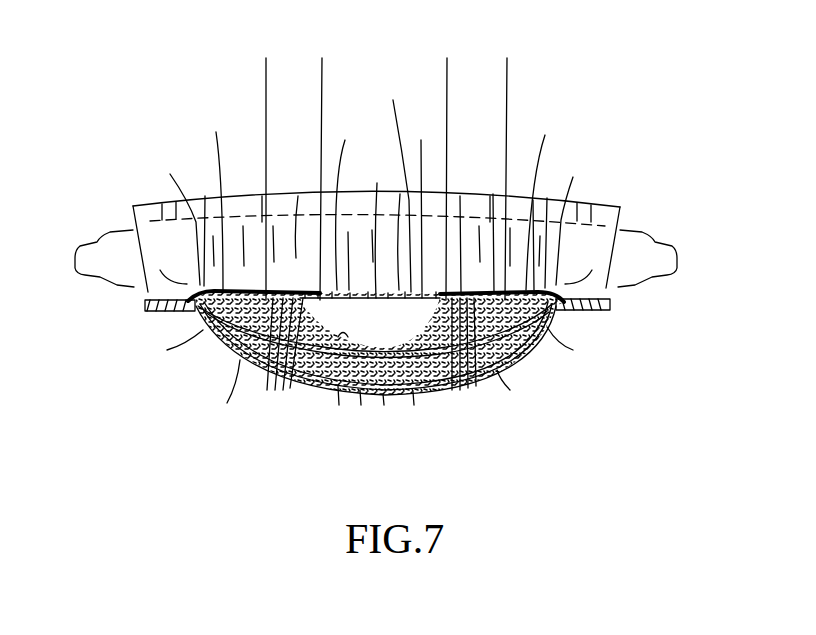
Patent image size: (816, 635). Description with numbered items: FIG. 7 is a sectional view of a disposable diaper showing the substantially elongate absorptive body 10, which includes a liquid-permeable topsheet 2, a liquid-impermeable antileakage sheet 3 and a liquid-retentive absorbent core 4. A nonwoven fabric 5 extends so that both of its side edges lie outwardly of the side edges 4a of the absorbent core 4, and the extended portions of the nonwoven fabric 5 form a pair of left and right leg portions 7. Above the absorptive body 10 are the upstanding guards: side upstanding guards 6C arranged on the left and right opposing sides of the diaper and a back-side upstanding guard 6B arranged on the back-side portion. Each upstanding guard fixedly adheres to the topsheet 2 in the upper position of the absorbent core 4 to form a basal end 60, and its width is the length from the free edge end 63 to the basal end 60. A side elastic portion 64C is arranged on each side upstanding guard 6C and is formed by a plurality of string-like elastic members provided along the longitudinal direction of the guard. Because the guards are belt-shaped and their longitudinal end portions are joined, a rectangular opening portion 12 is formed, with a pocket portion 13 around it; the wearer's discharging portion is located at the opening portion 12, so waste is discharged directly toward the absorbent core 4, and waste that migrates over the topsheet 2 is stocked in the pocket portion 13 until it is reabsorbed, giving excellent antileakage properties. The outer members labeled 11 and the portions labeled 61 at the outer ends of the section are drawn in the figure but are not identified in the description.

The topsheet 2 is at (336, 411).
The antileakage sheet 3 is at (363, 413).
The absorbent core 4 is at (390, 415).
The nonwoven fabric 5 is at (416, 414).
The absorptive body 10 is at (380, 380).
The ear piece 11 is at (100, 248).
The opening portion 12 is at (379, 227).
The pocket portion 13 is at (364, 392).
The side edges of the absorbent core 4a is at (366, 346).
The basal end 60 is at (372, 215).
The hem 61 is at (143, 303).
The free edge end 63 is at (384, 202).
The back-side upstanding guard 6B is at (397, 179).
The side upstanding guard 6C is at (379, 197).
The leg portion 7 is at (376, 262).
The side elastic portion 64C is at (322, 55).